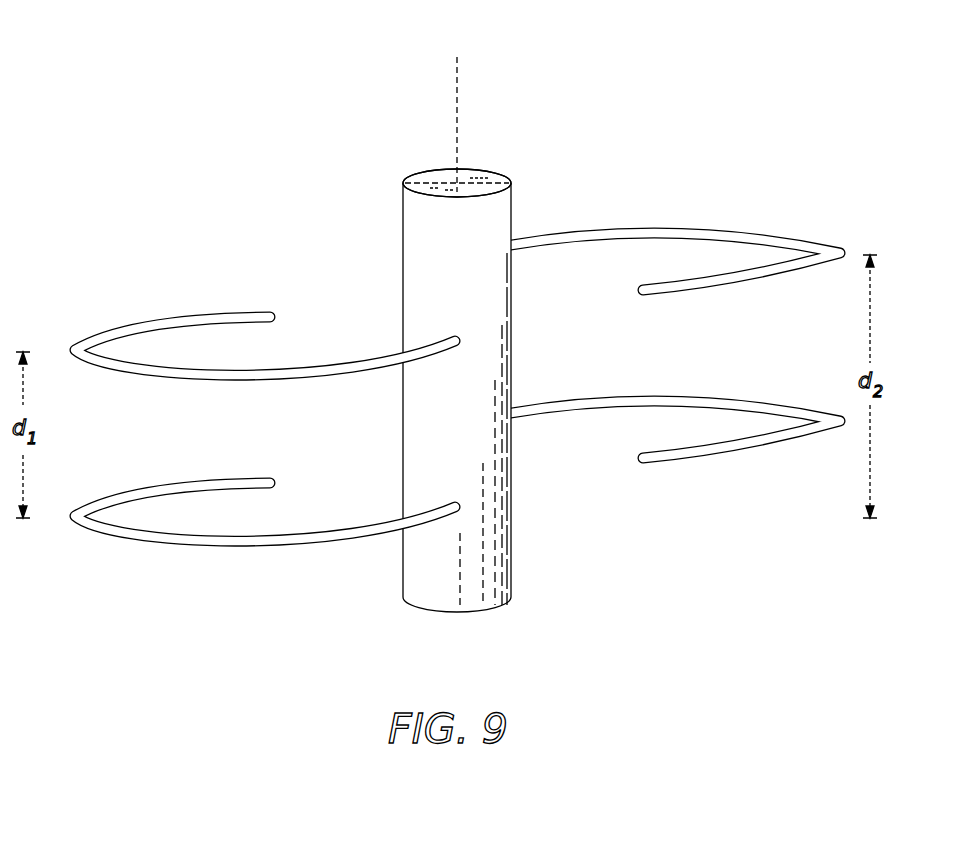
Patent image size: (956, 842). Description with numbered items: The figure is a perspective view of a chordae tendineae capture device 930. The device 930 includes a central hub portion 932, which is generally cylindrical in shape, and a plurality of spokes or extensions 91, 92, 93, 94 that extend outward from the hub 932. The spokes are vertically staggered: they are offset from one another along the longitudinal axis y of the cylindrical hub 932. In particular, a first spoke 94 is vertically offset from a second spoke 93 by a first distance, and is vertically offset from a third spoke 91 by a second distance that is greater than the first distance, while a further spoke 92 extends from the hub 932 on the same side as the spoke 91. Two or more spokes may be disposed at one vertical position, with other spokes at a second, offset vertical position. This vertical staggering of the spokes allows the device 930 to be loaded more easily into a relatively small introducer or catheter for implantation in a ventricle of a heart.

The chordae tendineae capture device 930 is at (219, 108).
The central hub portion 932 is at (484, 180).
The third spoke/extension 91 is at (686, 228).
The spoke/extension 92 is at (686, 396).
The second spoke/extension 93 is at (186, 315).
The first spoke/extension 94 is at (186, 482).